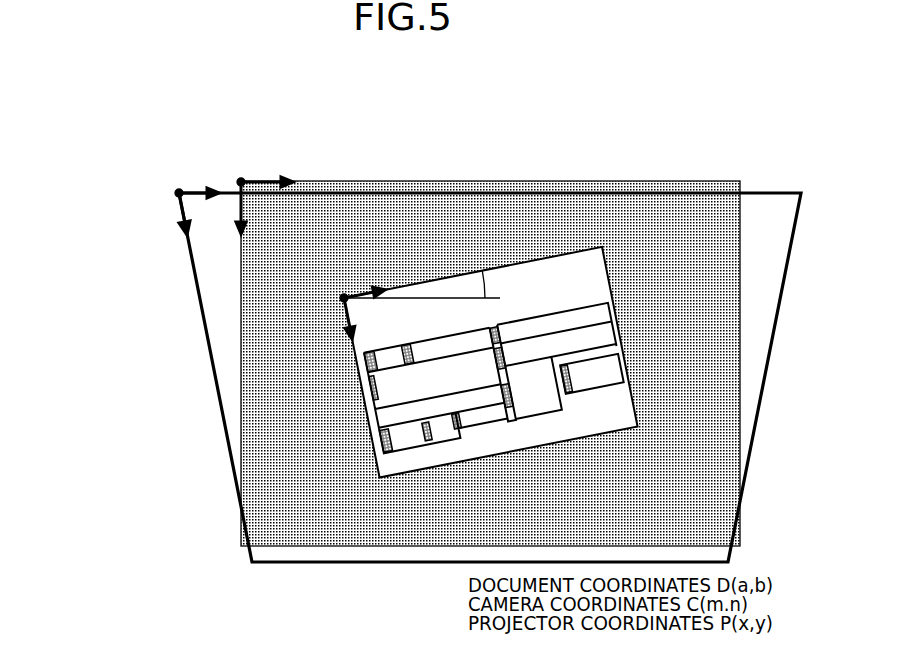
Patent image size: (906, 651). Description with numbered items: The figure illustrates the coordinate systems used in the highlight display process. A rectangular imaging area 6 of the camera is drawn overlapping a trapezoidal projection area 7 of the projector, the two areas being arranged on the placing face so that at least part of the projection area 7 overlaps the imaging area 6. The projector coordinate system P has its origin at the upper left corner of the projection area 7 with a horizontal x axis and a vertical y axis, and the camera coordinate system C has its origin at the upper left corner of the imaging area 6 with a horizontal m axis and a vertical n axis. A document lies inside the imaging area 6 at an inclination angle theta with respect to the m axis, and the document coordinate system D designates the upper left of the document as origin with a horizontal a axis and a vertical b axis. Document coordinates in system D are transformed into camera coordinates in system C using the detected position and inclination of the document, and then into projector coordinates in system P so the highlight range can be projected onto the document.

The imaging area 6 is at (741, 390).
The projection area 7 is at (765, 190).
The camera coordinate system C is at (241, 180).
The projector coordinate system P is at (178, 192).
The document coordinate system D is at (344, 296).